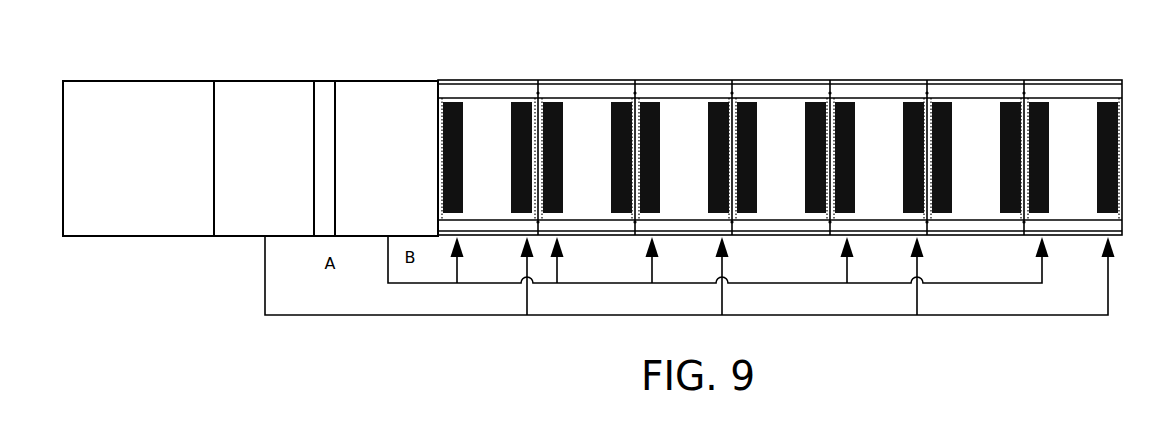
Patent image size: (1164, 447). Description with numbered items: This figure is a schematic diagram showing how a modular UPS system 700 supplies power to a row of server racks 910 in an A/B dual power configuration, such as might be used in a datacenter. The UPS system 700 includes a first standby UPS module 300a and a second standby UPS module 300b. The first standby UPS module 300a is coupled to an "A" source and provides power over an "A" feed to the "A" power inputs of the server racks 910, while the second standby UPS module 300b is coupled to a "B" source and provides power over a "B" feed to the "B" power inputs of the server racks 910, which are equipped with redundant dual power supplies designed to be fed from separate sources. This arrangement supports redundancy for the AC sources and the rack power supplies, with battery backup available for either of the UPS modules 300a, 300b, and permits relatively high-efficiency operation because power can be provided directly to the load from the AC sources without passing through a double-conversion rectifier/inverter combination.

The first standby UPS module 300a is at (265, 81).
The second standby UPS module 300b is at (387, 81).
The UPS system 700 is at (225, 236).
The server racks 910 is at (473, 80).